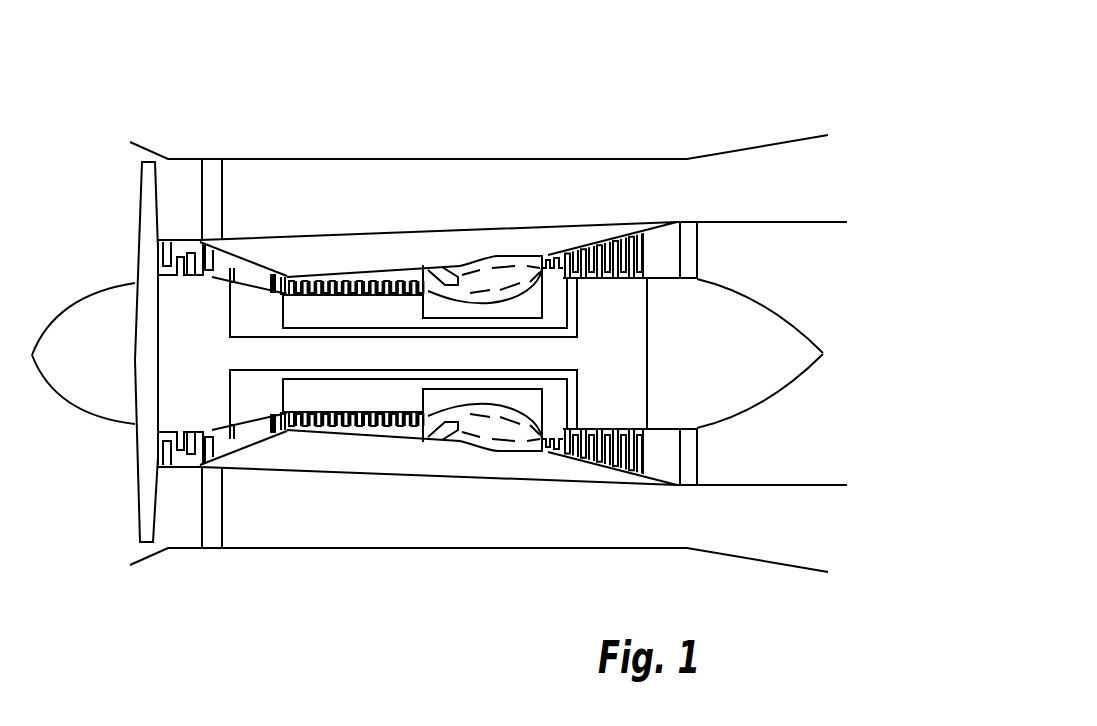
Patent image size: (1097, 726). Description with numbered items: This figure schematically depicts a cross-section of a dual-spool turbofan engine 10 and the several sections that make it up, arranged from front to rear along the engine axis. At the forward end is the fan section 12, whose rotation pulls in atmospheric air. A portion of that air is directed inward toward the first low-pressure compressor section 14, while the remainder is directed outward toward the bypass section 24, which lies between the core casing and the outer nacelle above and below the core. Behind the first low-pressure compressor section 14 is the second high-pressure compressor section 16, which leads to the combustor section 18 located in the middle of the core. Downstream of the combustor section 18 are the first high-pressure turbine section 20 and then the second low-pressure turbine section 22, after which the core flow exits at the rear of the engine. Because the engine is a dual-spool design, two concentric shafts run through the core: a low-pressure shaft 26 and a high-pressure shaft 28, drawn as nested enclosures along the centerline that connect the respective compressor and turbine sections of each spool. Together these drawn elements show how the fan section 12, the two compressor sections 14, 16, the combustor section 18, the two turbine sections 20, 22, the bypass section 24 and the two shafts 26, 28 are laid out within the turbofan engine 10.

The turbofan engine 10 is at (776, 78).
The fan section 12 is at (132, 268).
The first low-pressure compressor section 14 is at (178, 240).
The second high-pressure compressor section 16 is at (326, 279).
The combustor section 18 is at (492, 258).
The first high-pressure turbine section 20 is at (555, 262).
The second low-pressure turbine section 22 is at (593, 239).
The bypass section 24 is at (680, 187).
The low-pressure shaft 26 is at (250, 337).
The high-pressure shaft 28 is at (283, 395).